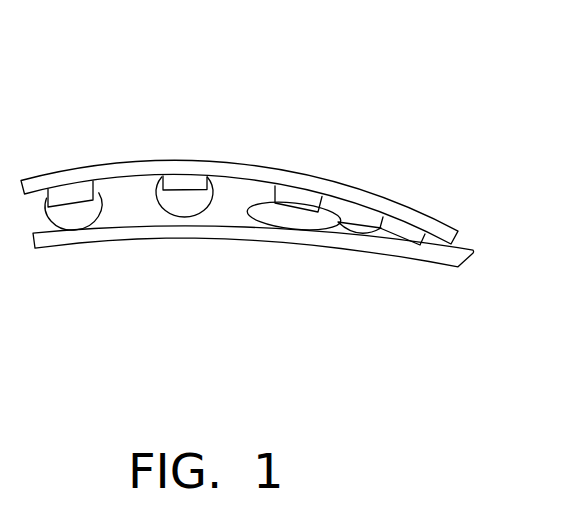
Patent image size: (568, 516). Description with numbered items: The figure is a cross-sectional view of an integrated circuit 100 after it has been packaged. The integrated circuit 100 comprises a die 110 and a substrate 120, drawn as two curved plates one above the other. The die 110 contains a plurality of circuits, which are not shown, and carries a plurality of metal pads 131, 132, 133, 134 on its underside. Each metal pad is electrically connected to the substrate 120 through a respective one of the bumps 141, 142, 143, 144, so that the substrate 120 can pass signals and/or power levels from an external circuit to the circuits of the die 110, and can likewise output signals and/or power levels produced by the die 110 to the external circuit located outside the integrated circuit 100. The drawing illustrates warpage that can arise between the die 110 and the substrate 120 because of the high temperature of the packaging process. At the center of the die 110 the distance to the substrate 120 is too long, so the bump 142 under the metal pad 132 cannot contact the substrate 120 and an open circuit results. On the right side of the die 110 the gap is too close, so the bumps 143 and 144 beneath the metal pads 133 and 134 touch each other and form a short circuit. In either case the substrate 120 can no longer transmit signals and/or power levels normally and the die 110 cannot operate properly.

The integrated circuit 100 is at (528, 69).
The die 110 is at (242, 172).
The substrate 120 is at (223, 232).
The metal pad 131 is at (70, 192).
The metal pad 132 is at (177, 181).
The metal pad 133 is at (298, 193).
The metal pad 134 is at (403, 226).
The bump 141 is at (78, 217).
The bump 142 is at (177, 207).
The bump 143 is at (290, 220).
The bump 144 is at (373, 232).